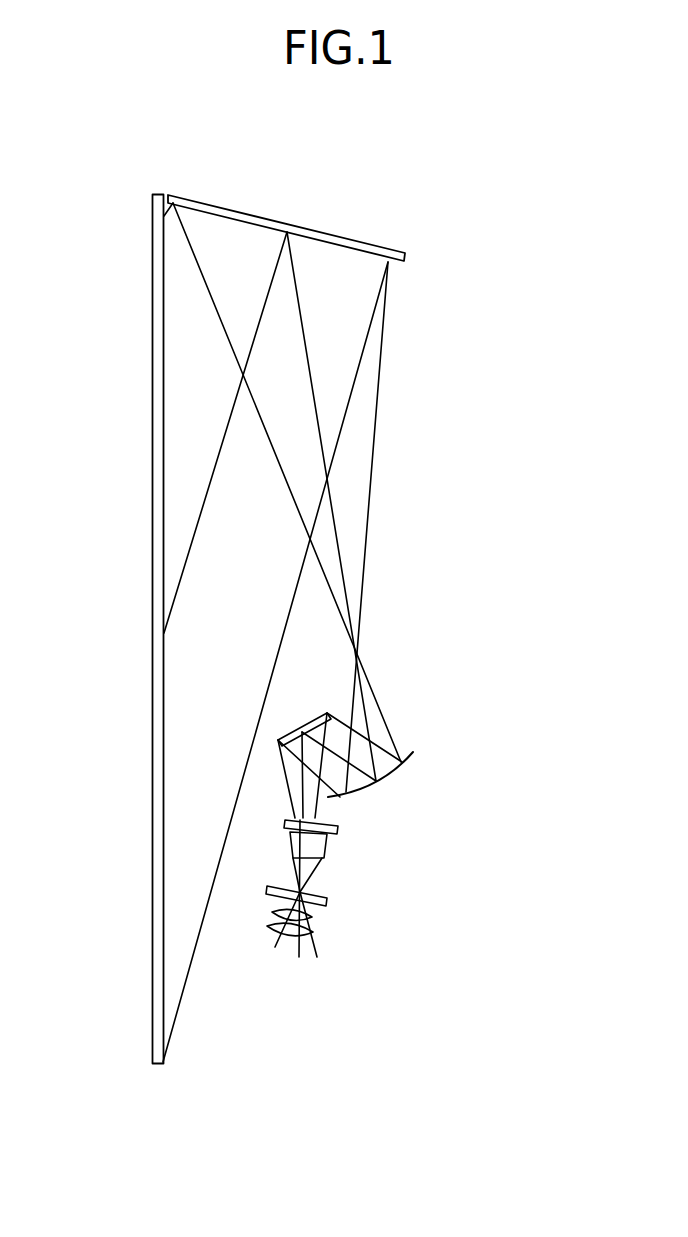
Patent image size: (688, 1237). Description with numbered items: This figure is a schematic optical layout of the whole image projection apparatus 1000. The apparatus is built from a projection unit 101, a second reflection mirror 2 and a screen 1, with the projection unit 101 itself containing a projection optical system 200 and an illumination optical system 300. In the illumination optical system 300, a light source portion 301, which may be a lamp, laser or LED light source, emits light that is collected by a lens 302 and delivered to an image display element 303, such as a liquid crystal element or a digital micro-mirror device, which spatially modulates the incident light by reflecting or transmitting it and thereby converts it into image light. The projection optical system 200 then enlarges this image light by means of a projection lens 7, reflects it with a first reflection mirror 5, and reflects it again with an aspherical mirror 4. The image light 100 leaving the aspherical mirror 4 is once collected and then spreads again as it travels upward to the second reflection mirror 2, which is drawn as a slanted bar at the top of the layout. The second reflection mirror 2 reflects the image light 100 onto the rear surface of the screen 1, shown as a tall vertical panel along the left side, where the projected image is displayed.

The image projection apparatus 1000 is at (172, 126).
The screen 1 is at (153, 452).
The second reflection mirror 2 is at (330, 229).
The image light 100 is at (328, 455).
The projection unit 101 is at (513, 702).
The projection optical system 200 is at (428, 702).
The aspherical mirror 4 is at (405, 752).
The first reflection mirror 5 is at (295, 725).
The projection lens 7 is at (287, 838).
The illumination optical system 300 is at (362, 890).
The light source portion 301 is at (287, 943).
The lens 302 is at (313, 927).
The image display element 303 is at (320, 890).